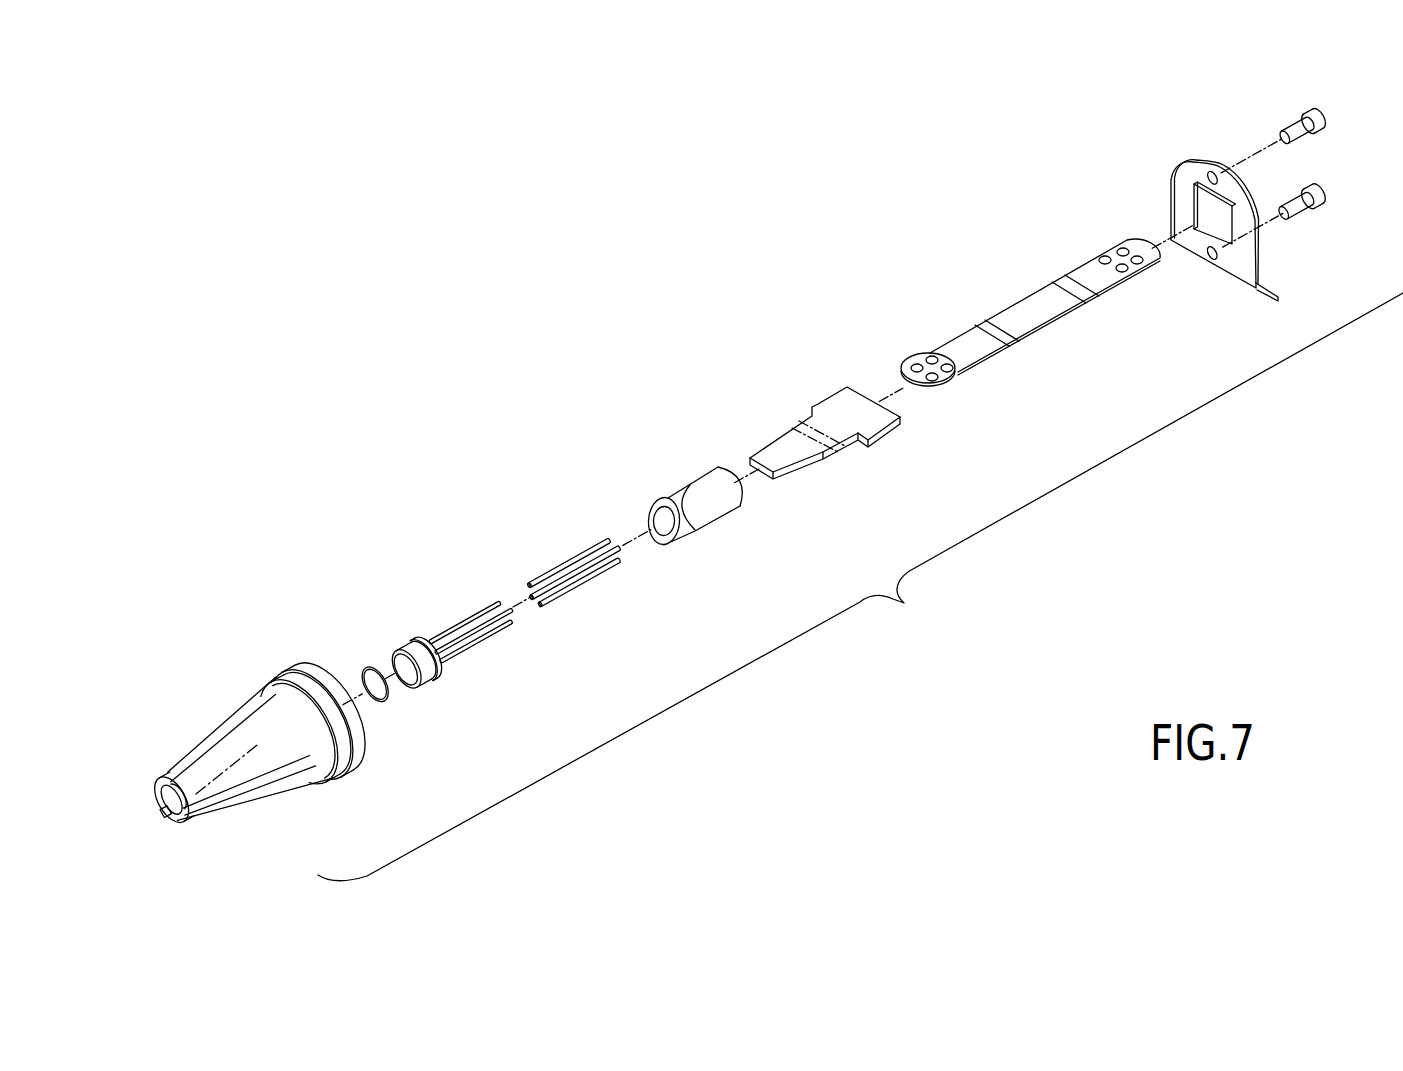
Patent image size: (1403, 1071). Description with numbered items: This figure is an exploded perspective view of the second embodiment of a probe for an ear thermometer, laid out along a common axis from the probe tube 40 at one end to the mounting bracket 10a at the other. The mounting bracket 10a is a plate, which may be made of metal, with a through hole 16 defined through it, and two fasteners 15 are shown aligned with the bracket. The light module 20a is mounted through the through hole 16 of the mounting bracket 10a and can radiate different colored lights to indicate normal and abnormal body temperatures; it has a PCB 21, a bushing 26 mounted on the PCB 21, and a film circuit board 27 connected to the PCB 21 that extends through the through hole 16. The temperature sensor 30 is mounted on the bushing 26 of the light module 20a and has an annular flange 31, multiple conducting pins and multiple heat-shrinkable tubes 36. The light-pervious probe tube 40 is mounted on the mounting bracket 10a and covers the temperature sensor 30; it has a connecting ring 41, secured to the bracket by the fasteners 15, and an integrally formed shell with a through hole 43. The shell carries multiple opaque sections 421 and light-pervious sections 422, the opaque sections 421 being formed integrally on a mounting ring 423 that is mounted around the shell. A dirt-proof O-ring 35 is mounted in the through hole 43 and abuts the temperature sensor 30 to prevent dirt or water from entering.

The mounting bracket 10a is at (1210, 273).
The fasteners 15 is at (1318, 108).
The through hole 16 is at (1212, 217).
The light module 20a is at (903, 403).
The PCB 21 is at (845, 440).
The bushing 26 is at (695, 522).
The film circuit board 27 is at (983, 352).
The temperature sensor 30 is at (505, 613).
The annular flange 31 is at (442, 673).
The dirt-proof O-ring 35 is at (377, 687).
The heat-shrinkable tubes 36 is at (580, 558).
The probe tube 40 is at (265, 718).
The connecting ring 41 is at (353, 760).
The opaque sections 421 is at (250, 698).
The light-pervious sections 422 is at (230, 740).
The mounting ring 423 is at (272, 677).
The through hole 43 is at (180, 807).